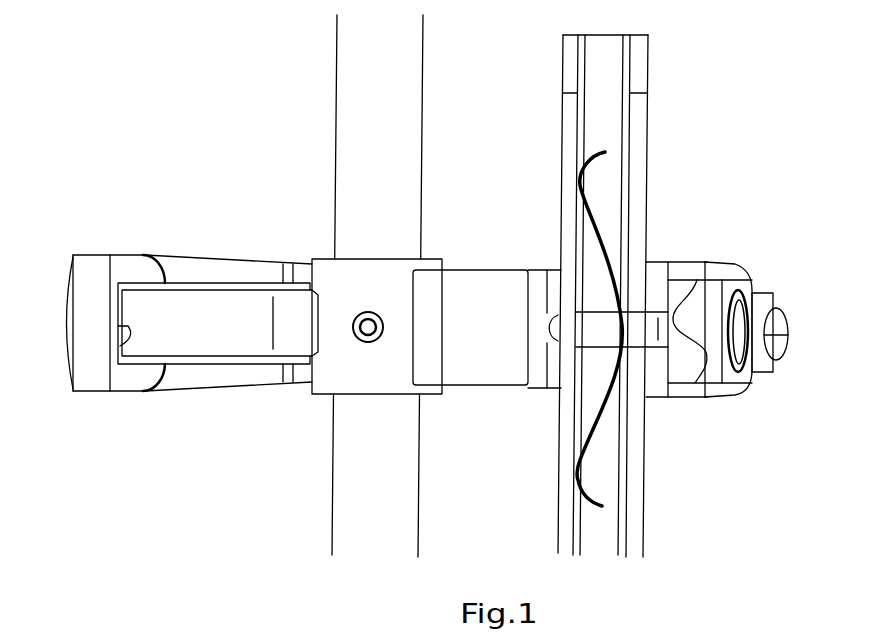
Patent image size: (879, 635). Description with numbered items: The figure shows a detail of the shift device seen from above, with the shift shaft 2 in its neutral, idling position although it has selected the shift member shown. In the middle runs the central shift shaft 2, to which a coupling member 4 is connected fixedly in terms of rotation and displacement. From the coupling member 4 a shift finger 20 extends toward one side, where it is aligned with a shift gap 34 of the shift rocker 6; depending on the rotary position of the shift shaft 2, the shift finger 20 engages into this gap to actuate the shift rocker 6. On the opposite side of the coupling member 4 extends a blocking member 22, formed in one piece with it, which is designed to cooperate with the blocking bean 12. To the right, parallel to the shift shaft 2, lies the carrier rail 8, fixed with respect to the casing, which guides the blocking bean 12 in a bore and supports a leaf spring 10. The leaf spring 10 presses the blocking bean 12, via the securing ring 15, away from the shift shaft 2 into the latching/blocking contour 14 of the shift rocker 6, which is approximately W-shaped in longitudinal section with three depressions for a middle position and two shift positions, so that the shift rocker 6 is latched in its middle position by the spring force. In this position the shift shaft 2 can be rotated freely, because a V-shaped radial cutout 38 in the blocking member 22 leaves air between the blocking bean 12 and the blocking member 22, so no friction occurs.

The central shift shaft 2 is at (370, 127).
The coupling member 4 is at (347, 292).
The shift rocker or shift fork 6 is at (233, 377).
The carrier rail 8 is at (603, 108).
The leaf spring 10 is at (602, 222).
The blocking bean 12 is at (592, 333).
The latching/blocking contour 14 is at (675, 352).
The securing ring 15 is at (632, 343).
The shift finger 20 is at (212, 312).
The blocking member 22 is at (470, 312).
The shift gap 34 is at (120, 346).
The V-shaped radial cutout 38 is at (540, 313).